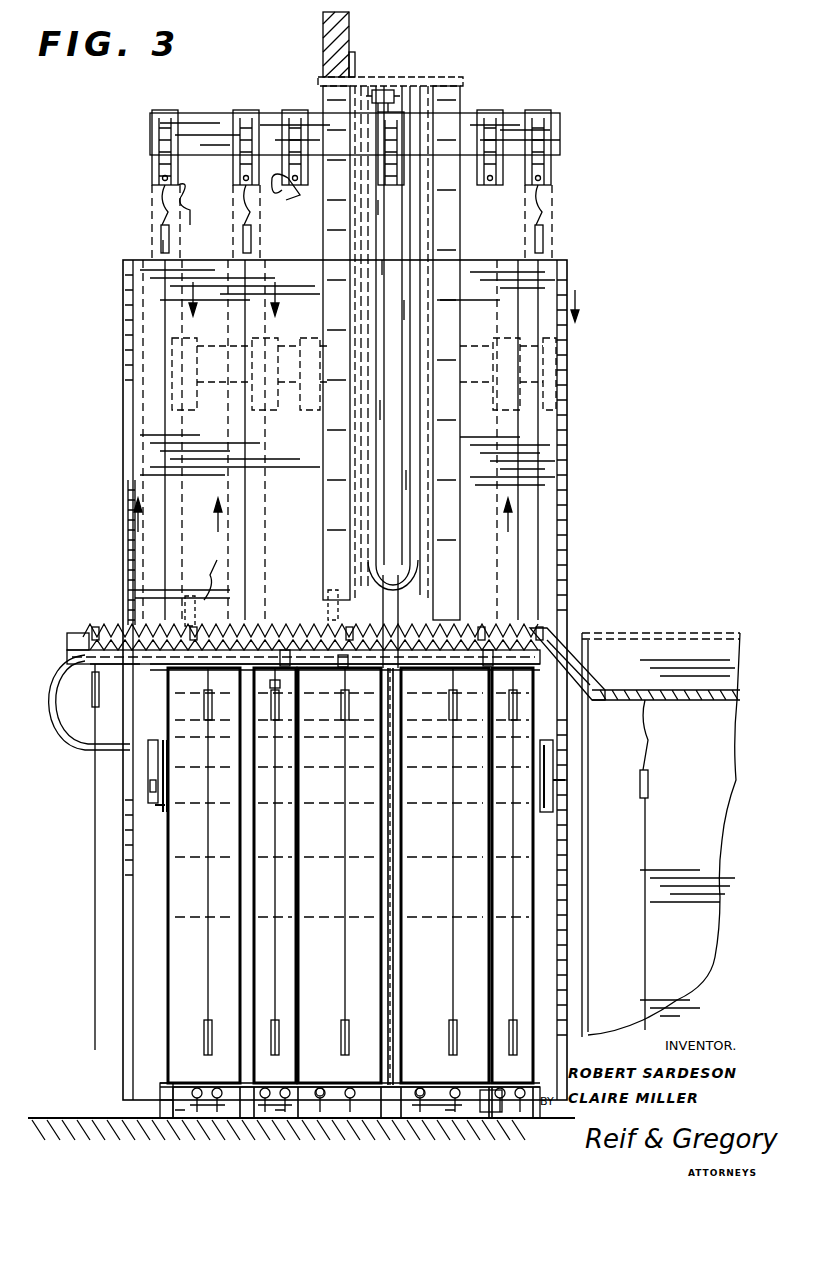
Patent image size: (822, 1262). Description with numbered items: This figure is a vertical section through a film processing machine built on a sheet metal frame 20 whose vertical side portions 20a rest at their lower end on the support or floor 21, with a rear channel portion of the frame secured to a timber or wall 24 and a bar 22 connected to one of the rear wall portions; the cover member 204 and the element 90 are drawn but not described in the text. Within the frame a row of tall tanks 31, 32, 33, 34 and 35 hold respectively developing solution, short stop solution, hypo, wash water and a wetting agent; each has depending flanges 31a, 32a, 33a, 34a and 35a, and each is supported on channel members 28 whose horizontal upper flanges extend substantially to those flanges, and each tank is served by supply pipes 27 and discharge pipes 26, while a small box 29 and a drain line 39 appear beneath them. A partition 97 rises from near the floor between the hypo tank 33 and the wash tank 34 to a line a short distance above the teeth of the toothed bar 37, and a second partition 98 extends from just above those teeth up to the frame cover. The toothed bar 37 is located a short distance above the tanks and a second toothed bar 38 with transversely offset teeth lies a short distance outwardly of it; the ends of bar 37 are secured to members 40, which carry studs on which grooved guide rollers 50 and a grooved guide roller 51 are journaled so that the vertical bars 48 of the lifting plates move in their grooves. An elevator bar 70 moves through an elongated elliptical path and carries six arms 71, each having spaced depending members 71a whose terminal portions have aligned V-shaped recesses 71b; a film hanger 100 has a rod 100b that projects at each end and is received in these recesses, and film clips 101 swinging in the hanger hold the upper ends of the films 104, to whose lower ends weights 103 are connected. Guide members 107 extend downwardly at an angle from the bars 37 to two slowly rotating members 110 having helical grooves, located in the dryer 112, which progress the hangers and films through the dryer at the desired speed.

The timber or wall 24 is at (350, 36).
The drive housing frame 204 is at (438, 84).
The partition 98 is at (345, 431).
The motor 90 is at (390, 140).
The elevator bar 70 is at (200, 128).
The arms or brackets 71 is at (300, 112).
The depending members 71a is at (201, 204).
The V-shaped recess 71b is at (288, 200).
The film hanger 100 is at (170, 212).
The film clips 101 is at (158, 237).
The frame 20 is at (578, 572).
The vertical side portions 20a is at (123, 430).
The films 104 is at (160, 317).
The weights 103 is at (324, 468).
The toothed bar 38 is at (172, 626).
The rod 100b is at (210, 575).
The flange 35a is at (280, 646).
The guide members 107 is at (590, 666).
The bar 22 is at (45, 705).
The toothed bar 37 is at (110, 690).
The members 40 is at (172, 772).
The grooved guide rollers 50 is at (150, 786).
The vertical bars 48 is at (152, 806).
The grooved guide roller 51 is at (556, 784).
The tank 31 is at (175, 1018).
The tank 32 is at (290, 985).
The tank 33 is at (305, 1050).
The partition 97 is at (400, 818).
The tank 34 is at (405, 995).
The tank 35 is at (497, 1020).
The flange 32a is at (292, 1080).
The flange 33a is at (341, 1078).
The flange 34a is at (412, 1085).
The flange 31a is at (160, 1088).
The drain line 39 is at (160, 1098).
The support or floor 21 is at (525, 1130).
The discharge pipes 26 is at (230, 1125).
The supply pipes 27 is at (203, 1120).
The channel members 28 is at (175, 1122).
The valve box 29 is at (491, 1102).
The dryer 112 is at (660, 633).
The members with helical grooves 110 is at (676, 706).